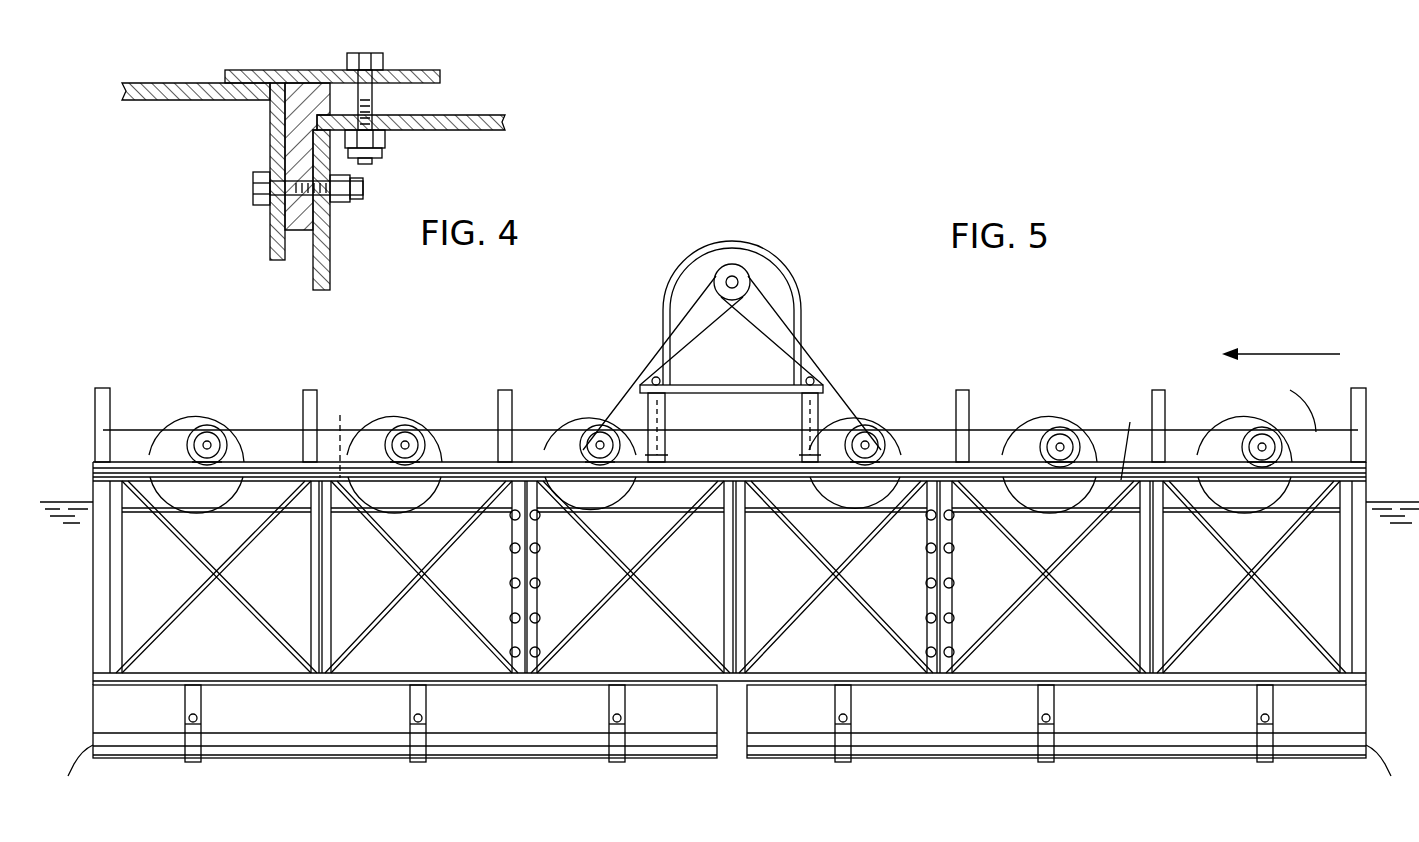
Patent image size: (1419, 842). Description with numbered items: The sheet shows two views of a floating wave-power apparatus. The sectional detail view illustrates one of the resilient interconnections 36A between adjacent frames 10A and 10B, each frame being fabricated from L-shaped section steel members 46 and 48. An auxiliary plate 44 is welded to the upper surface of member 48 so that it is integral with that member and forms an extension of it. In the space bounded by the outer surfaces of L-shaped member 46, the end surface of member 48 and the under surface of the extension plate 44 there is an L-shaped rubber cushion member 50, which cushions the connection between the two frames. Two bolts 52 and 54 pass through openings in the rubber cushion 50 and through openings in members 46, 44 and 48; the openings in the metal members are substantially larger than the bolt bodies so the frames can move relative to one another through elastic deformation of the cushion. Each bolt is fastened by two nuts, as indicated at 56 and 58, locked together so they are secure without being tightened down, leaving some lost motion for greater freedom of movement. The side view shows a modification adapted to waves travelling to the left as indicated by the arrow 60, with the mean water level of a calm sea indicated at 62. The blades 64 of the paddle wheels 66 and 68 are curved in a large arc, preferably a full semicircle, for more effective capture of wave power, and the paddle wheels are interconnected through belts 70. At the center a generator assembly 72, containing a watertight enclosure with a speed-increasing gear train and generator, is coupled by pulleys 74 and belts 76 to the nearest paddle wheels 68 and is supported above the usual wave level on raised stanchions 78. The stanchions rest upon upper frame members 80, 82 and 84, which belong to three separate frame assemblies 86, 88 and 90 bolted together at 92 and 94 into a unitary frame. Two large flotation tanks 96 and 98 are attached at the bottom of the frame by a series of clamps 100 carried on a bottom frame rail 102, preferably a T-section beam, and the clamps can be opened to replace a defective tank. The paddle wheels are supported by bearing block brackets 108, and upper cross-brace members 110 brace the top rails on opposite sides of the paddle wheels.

In FIG. 4, the frame 10A is at (468, 102).
In FIG. 4, the frame 10B is at (189, 77).
In FIG. 4, the interconnection 36A is at (370, 94).
In FIG. 4, the auxiliary plate 44 is at (302, 68).
In FIG. 4, the L-shaped section steel member 46 is at (332, 262).
In FIG. 4, the L-shaped section steel member 48 is at (268, 130).
In FIG. 4, the rubber cushion member 50 is at (268, 76).
In FIG. 4, the bolt 52 is at (372, 60).
In FIG. 4, the bolt 54 is at (252, 192).
In FIG. 4, the nut 56 is at (388, 142).
In FIG. 4, the nut 58 is at (340, 210).
In FIG. 5, the arrow 60 is at (1316, 352).
In FIG. 5, the water level 62 is at (78, 500).
In FIG. 5, the blades 64 is at (232, 397).
In FIG. 5, the paddle wheels 66 is at (178, 393).
In FIG. 5, the paddle wheels 68 is at (590, 390).
In FIG. 5, the belts 70 is at (298, 429).
In FIG. 5, the generator assembly 72 is at (758, 242).
In FIG. 5, the pulleys 74 is at (731, 265).
In FIG. 5, the belts 76 is at (655, 351).
In FIG. 5, the stanchions 78 is at (798, 421).
In FIG. 5, the upper frame member 80 is at (765, 479).
In FIG. 5, the upper frame member 82 is at (337, 433).
In FIG. 5, the upper frame member 84 is at (1134, 436).
In FIG. 5, the frame assembly 86 is at (336, 550).
In FIG. 5, the frame assembly 88 is at (754, 550).
In FIG. 5, the frame assembly 90 is at (1169, 550).
In FIG. 5, the bolted connection 92 is at (509, 617).
In FIG. 5, the bolted connection 94 is at (925, 617).
In FIG. 5, the flotation tank 96 is at (1152, 738).
In FIG. 5, the flotation tank 98 is at (523, 735).
In FIG. 5, the clamps 100 is at (192, 769).
In FIG. 5, the bottom frame rail 102 is at (404, 671).
In FIG. 5, the bearing block brackets 108 is at (200, 445).
In FIG. 5, the upper cross-brace members 110 is at (103, 387).